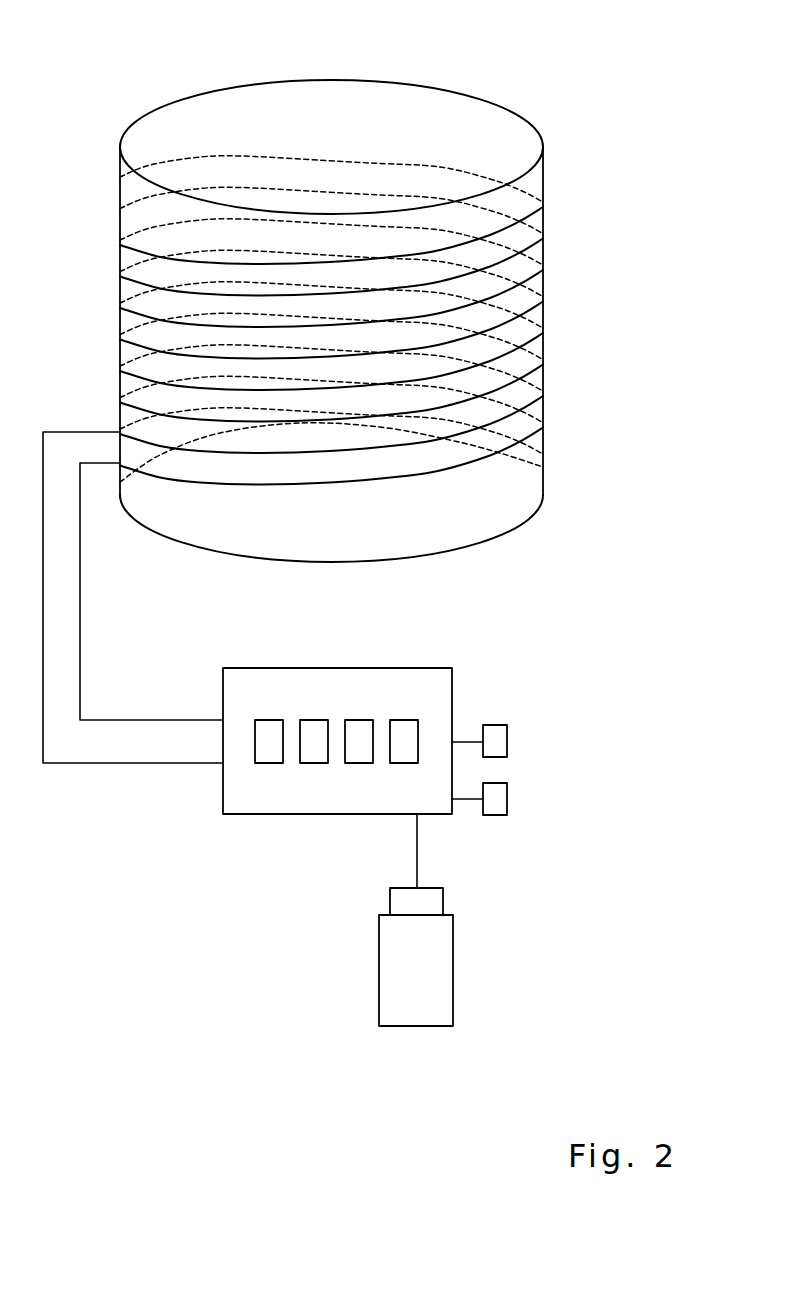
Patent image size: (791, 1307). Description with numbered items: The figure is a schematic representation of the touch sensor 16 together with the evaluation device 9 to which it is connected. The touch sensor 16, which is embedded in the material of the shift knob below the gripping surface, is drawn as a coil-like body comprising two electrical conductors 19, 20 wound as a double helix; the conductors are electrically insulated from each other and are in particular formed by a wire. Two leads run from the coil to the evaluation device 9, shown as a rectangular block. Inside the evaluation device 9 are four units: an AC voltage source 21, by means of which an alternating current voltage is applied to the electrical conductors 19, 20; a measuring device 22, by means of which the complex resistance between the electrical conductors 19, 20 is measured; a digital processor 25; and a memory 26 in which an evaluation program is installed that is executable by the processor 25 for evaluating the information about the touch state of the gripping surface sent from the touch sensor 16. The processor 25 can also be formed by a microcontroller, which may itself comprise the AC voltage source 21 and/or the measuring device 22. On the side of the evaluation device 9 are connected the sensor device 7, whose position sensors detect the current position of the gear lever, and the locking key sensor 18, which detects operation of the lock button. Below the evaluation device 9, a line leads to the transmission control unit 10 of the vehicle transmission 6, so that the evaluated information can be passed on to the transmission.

The touch sensor 16 is at (88, 112).
The electrical conductor 19 is at (350, 483).
The electrical conductor 20 is at (395, 447).
The evaluation device 9 is at (453, 688).
The AC voltage source 21 is at (267, 755).
The measuring device 22 is at (311, 755).
The digital processor 25 is at (357, 755).
The memory 26 is at (402, 755).
The sensor device 7 is at (498, 741).
The locking key sensor 18 is at (498, 800).
The transmission control unit 10 is at (433, 900).
The vehicle transmission 6 is at (427, 1012).